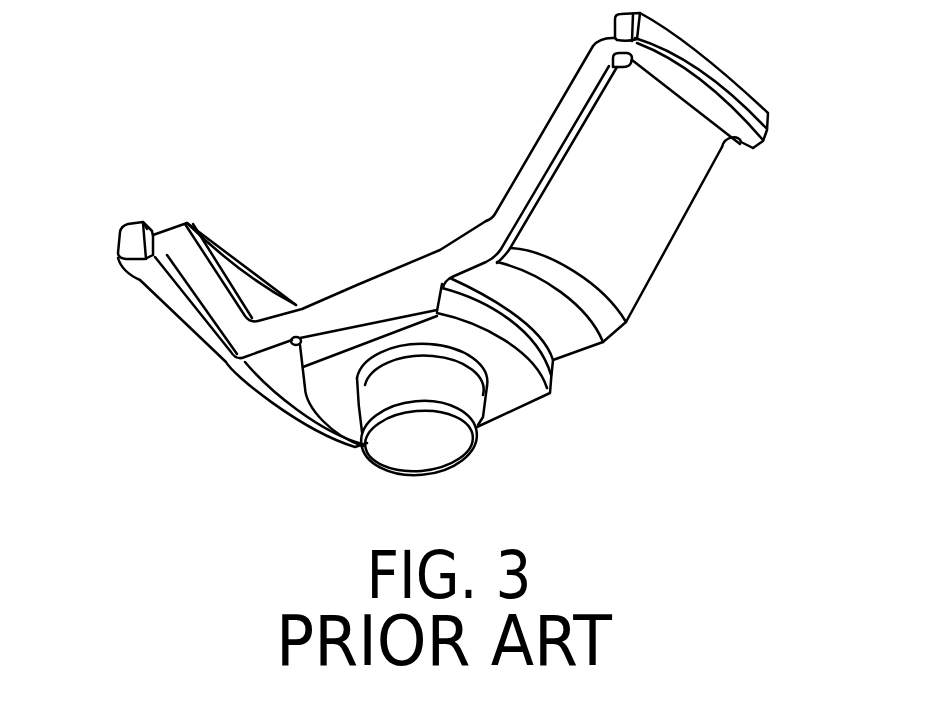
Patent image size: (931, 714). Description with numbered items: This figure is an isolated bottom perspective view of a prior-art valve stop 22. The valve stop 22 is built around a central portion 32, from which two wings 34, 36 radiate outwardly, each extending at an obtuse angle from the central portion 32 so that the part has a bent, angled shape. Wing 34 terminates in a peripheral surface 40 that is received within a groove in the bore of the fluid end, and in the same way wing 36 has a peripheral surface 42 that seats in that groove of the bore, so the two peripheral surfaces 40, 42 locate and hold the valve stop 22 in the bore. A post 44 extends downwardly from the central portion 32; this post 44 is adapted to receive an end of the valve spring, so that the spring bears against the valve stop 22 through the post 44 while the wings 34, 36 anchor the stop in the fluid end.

The valve stop 22 is at (722, 222).
The central portion 32 is at (525, 391).
The wing 34 is at (548, 147).
The wing 36 is at (205, 272).
The peripheral surface 40 is at (718, 77).
The peripheral surface 42 is at (146, 276).
The post 44 is at (453, 452).